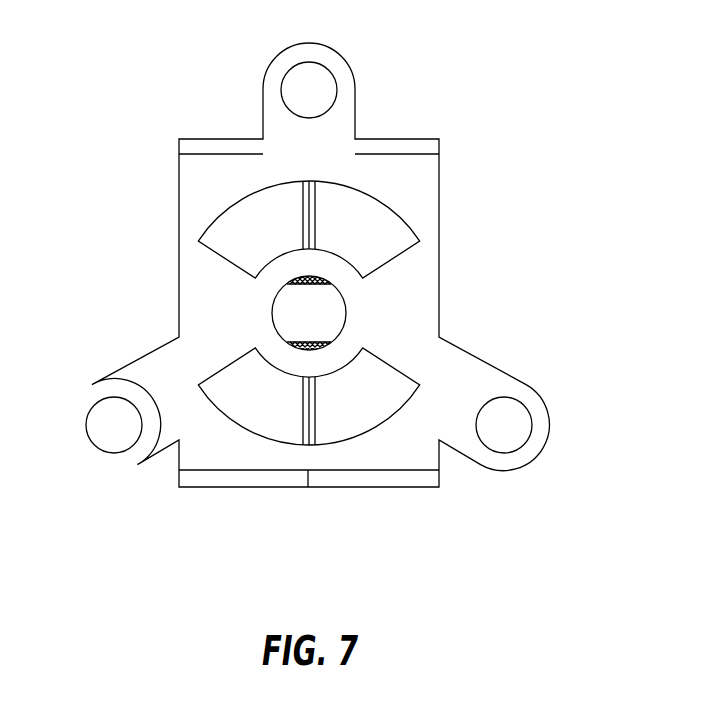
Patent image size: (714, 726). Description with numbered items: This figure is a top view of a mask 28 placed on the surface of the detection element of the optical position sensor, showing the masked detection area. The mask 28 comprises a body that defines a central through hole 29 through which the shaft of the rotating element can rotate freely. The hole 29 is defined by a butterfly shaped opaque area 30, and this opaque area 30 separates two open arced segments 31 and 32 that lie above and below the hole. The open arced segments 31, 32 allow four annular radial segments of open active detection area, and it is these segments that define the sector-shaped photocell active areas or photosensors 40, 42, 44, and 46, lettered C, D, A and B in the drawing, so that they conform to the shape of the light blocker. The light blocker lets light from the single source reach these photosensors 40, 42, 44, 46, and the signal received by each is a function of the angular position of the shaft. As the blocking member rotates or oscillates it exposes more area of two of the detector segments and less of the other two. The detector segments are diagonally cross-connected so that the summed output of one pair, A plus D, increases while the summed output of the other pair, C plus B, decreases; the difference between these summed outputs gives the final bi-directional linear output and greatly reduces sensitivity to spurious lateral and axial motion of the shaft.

The mask 28 is at (458, 188).
The central through hole 29 is at (315, 313).
The butterfly shaped opaque area 30 is at (410, 300).
The open arced segment 31 is at (207, 248).
The open arced segment 32 is at (212, 373).
The photosensor 40 is at (275, 413).
The photosensor 42 is at (348, 418).
The photosensor 44 is at (258, 213).
The photosensor 46 is at (367, 210).